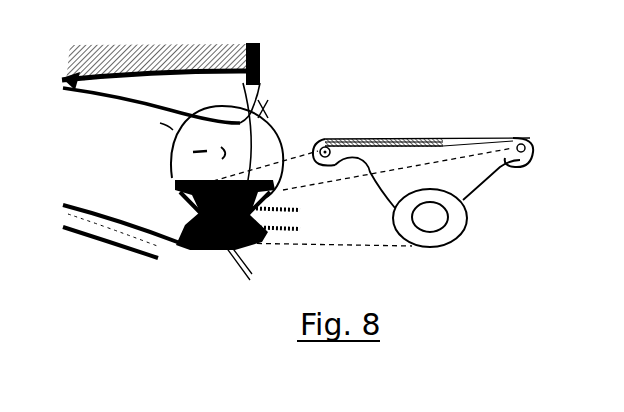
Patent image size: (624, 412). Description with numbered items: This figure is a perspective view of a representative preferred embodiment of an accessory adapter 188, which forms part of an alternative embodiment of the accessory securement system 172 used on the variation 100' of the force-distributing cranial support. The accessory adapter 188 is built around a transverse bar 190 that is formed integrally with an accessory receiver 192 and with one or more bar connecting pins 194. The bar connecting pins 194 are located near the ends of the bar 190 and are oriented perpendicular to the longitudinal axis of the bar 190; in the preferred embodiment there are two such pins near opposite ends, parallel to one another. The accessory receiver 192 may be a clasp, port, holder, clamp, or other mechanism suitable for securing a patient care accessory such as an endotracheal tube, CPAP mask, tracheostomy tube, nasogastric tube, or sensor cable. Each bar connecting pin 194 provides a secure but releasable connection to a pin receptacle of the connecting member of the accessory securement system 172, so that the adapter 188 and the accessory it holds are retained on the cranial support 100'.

The force-distributing cranial support variation 100' is at (135, 141).
The accessory securement system 172 is at (263, 83).
The accessory adapter 188 is at (436, 128).
The transverse bar 190 is at (428, 133).
The accessory receiver 192 is at (442, 231).
The bar connecting pin 194 is at (317, 140).